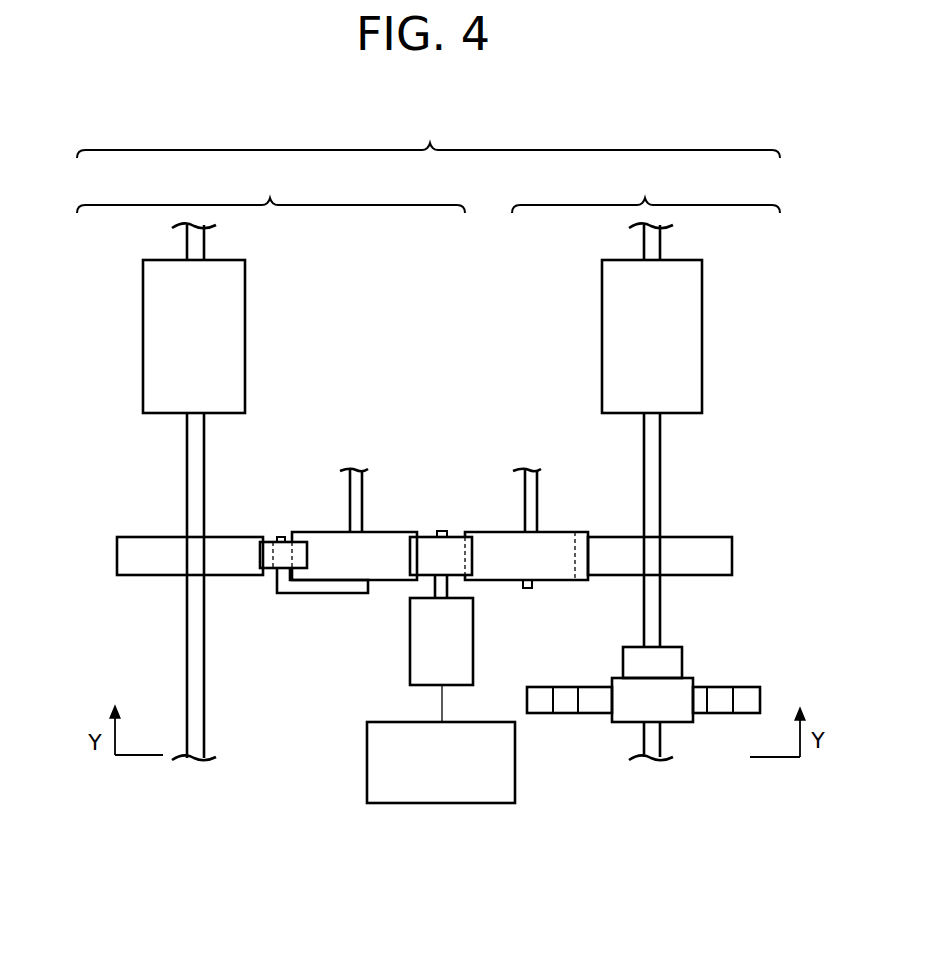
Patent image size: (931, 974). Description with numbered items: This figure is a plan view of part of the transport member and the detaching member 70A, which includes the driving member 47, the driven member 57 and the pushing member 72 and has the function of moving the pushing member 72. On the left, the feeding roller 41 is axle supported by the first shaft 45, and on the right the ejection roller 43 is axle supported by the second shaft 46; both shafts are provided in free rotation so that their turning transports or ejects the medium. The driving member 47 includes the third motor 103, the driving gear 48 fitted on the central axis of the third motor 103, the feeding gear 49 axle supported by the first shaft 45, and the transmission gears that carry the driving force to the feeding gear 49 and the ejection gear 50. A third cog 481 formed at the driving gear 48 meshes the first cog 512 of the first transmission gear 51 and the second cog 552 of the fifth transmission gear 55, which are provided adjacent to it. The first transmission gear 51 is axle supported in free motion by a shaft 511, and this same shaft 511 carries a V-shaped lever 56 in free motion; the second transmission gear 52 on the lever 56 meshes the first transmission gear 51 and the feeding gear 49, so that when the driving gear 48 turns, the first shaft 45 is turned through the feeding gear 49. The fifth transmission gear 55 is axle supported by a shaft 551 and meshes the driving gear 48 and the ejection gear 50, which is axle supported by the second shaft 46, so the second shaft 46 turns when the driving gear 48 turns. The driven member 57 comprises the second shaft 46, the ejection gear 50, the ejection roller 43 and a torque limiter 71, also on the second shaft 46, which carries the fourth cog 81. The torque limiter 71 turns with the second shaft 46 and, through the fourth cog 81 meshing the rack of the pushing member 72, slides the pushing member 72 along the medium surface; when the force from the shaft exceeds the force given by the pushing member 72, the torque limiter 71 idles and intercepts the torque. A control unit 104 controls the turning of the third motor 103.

The detaching member 70A is at (428, 133).
The driving member 47 is at (271, 189).
The driven member 57 is at (646, 189).
The feeding roller 41 is at (143, 343).
The ejection roller 43 is at (702, 343).
The first shaft 45 is at (205, 245).
The second shaft 46 is at (662, 247).
The feeding gear 49 is at (117, 557).
The ejection gear 50 is at (698, 535).
The first transmission gear 51 is at (318, 532).
The shaft 511 is at (355, 470).
The first cog 512 is at (393, 578).
The second transmission gear 52 is at (262, 553).
The lever 56 is at (313, 595).
The driving gear 48 is at (437, 535).
The third cog 481 is at (455, 537).
The fifth transmission gear 55 is at (557, 532).
The shaft 551 is at (531, 470).
The second cog 552 is at (553, 580).
The third motor 103 is at (410, 675).
The control unit 104 is at (367, 762).
The torque limiter 71 is at (685, 663).
The pushing member 72 is at (568, 717).
The fourth cog 81 is at (682, 725).